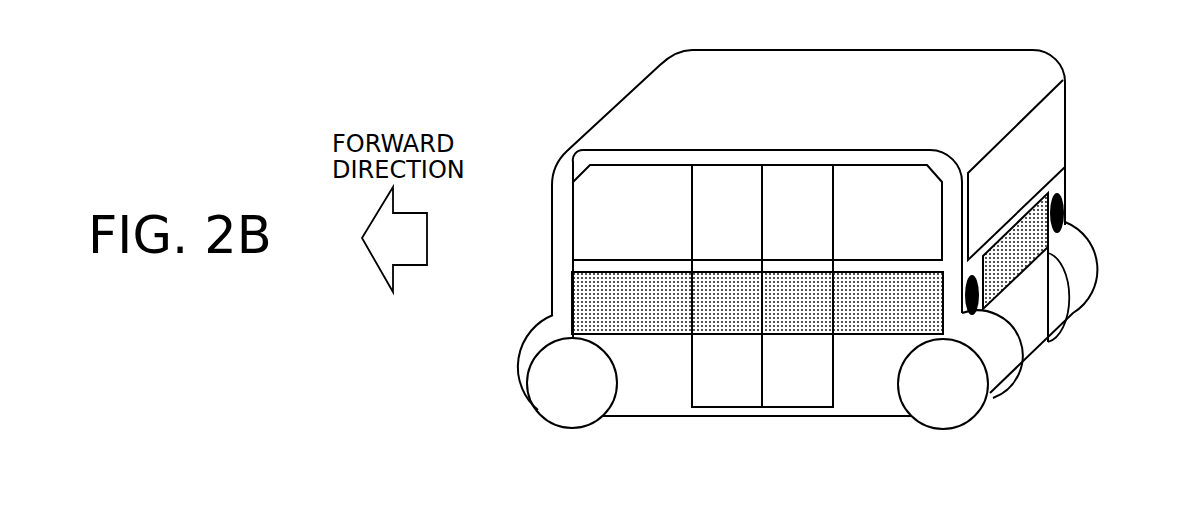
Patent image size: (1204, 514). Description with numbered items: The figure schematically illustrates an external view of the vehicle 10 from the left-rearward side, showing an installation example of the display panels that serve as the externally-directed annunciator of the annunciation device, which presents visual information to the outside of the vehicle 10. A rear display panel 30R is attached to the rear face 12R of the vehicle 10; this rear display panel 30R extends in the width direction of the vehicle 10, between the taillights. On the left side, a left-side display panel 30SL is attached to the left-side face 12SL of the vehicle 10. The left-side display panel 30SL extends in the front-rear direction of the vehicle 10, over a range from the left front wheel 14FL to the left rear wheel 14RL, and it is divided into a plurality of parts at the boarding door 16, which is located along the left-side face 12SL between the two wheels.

The vehicle 10 is at (843, 72).
The left-side face 12SL is at (852, 375).
The rear face 12R is at (1025, 308).
The left front wheel 14FL is at (548, 385).
The left rear wheel 14RL is at (968, 388).
The boarding door 16 is at (808, 392).
The left-side display panel 30SL is at (600, 302).
The rear display panel 30R is at (1024, 249).